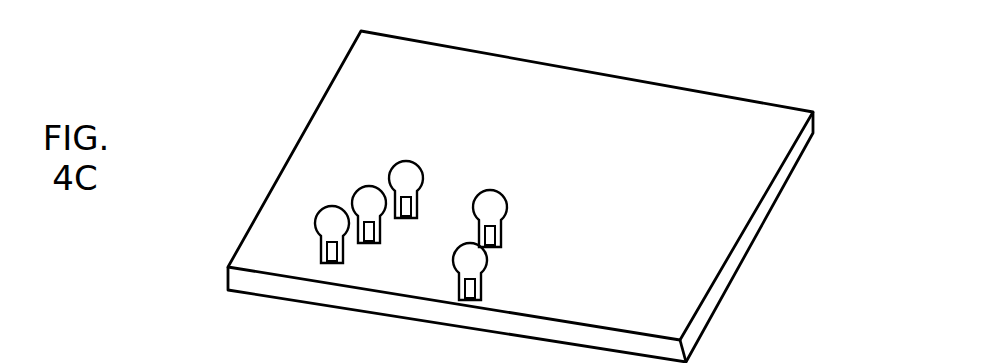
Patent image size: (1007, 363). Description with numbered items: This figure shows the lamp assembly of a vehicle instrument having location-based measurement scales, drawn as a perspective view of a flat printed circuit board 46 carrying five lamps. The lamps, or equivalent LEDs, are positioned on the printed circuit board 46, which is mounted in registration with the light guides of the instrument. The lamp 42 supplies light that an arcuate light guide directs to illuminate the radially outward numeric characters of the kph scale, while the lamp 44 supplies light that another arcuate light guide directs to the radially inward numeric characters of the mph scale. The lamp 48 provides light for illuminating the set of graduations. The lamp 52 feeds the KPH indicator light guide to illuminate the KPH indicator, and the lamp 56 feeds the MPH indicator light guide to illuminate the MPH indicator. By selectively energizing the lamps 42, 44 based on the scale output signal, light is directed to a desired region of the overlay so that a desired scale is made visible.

The printed circuit board 46 is at (337, 73).
The lamp 42 is at (333, 217).
The lamp 44 is at (407, 172).
The lamp 48 is at (372, 196).
The lamp 52 is at (477, 262).
The lamp 56 is at (490, 201).